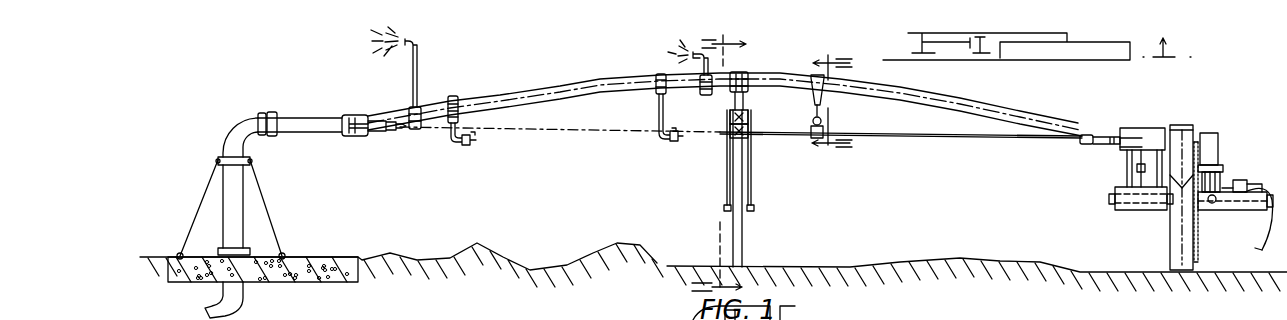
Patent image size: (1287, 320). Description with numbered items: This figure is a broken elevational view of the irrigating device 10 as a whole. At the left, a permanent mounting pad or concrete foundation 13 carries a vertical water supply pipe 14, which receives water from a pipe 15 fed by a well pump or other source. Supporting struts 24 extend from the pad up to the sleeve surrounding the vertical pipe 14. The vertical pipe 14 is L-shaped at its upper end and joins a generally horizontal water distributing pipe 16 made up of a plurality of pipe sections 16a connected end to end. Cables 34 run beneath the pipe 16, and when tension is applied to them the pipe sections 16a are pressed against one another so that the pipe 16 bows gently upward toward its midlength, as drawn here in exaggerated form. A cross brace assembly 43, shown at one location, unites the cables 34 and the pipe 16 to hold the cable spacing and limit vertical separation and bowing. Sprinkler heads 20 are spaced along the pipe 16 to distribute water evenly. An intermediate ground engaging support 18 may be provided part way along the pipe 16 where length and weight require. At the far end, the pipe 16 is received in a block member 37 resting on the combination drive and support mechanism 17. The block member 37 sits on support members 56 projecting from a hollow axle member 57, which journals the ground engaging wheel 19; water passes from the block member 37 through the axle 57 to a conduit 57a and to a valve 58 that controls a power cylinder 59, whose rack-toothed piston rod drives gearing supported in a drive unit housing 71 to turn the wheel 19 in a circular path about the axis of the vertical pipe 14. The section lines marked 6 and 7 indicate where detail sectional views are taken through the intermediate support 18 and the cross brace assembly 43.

The irrigation apparatus 10 is at (1264, 148).
The concrete foundation 13 is at (318, 252).
The vertical water supply pipe 14 is at (246, 148).
The pipe 15 is at (238, 308).
The water distributing pipe 16 is at (545, 90).
The pipe sections 16a is at (300, 117).
The combination drive and support mechanism 17 is at (1194, 120).
The intermediate ground engaging support 18 is at (721, 175).
The ground engaging wheel 19 is at (1170, 258).
The sprinkler heads 20 is at (412, 42).
The supporting struts 24 is at (210, 185).
The cables 34 is at (908, 141).
The block member 37 is at (1153, 128).
The cross brace assembly 43 is at (826, 112).
The support members 56 is at (1125, 160).
The hollow axle member 57 is at (1262, 212).
The conduit 57a is at (1249, 265).
The valve 58 is at (1128, 178).
The power cylinder 59 is at (1222, 200).
The drive unit housing 71 is at (1212, 133).
The section line 6- 6 is at (732, 165).
The section line 7- 7 is at (832, 108).